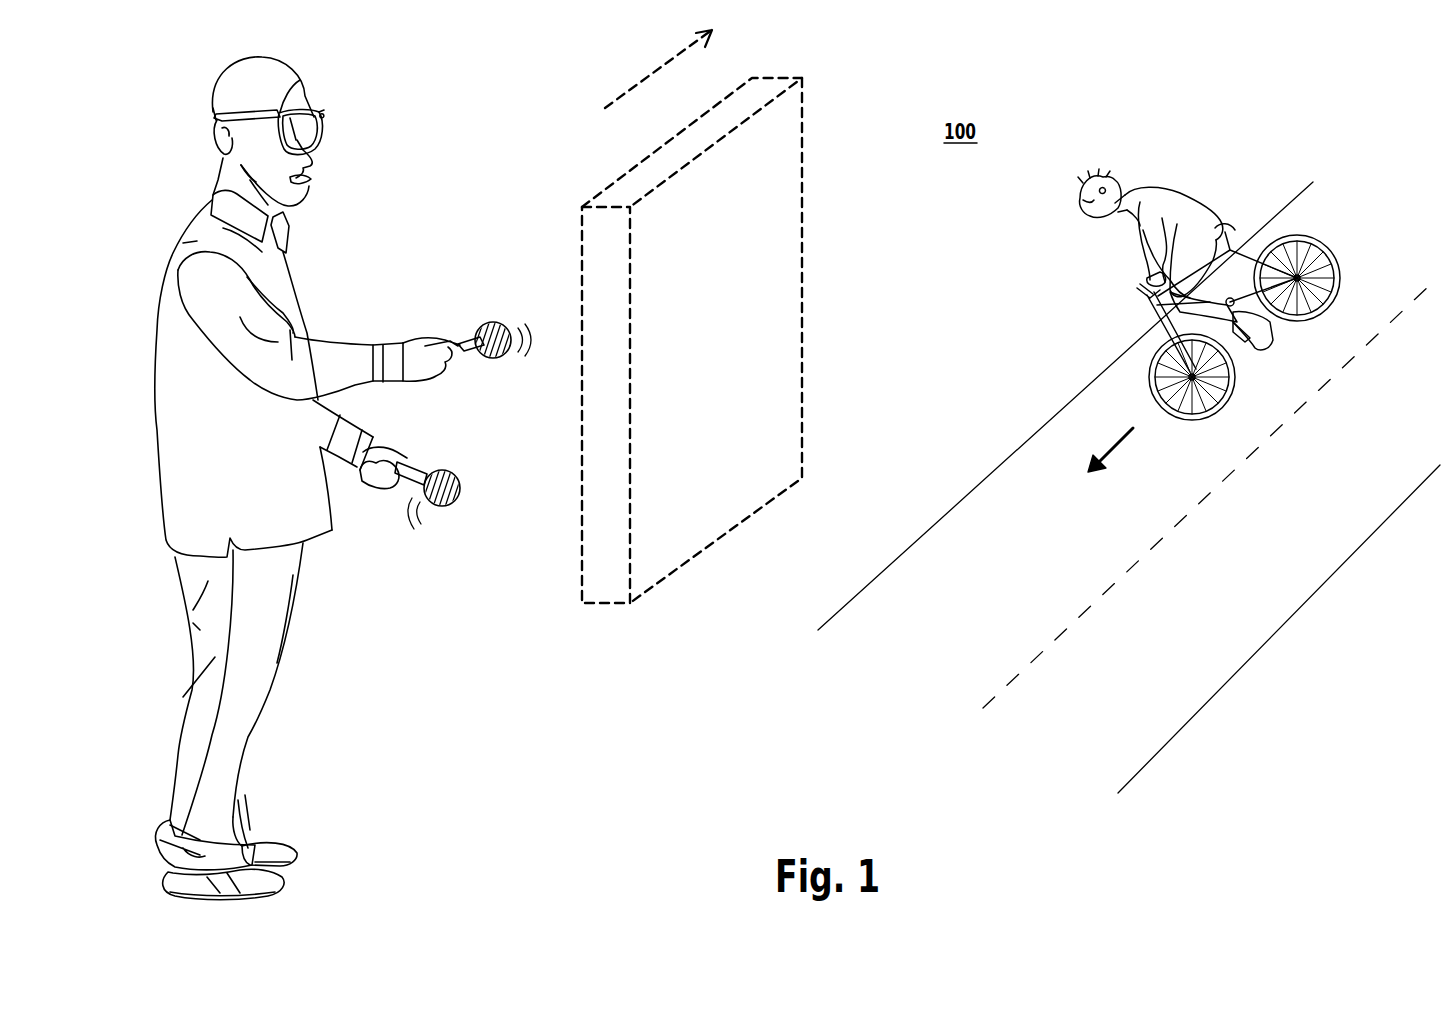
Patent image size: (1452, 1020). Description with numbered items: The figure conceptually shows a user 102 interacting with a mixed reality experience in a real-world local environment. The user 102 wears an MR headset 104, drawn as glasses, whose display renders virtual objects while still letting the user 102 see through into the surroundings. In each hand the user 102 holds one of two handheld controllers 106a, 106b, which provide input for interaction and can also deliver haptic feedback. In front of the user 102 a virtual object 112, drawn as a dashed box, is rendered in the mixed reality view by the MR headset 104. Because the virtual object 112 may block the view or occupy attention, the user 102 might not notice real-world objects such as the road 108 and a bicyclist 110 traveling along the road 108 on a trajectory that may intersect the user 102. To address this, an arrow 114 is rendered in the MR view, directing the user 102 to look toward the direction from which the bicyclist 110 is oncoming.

The user 102 is at (221, 72).
The MR headset 104 is at (323, 113).
The handheld controller 106a is at (452, 512).
The handheld controller 106b is at (497, 323).
The road 108 is at (1038, 430).
The bicyclist 110 is at (1190, 162).
The virtual object 112 is at (802, 100).
The arrow 114 is at (656, 68).